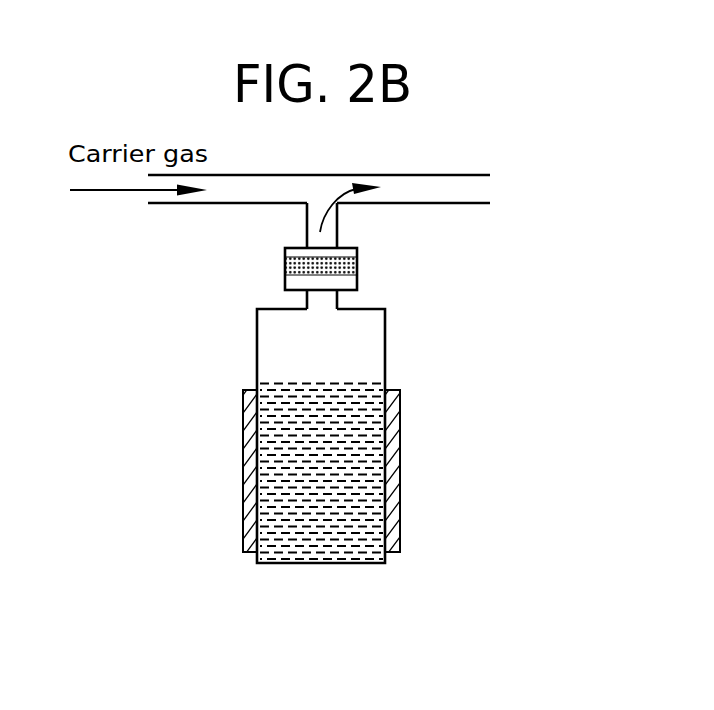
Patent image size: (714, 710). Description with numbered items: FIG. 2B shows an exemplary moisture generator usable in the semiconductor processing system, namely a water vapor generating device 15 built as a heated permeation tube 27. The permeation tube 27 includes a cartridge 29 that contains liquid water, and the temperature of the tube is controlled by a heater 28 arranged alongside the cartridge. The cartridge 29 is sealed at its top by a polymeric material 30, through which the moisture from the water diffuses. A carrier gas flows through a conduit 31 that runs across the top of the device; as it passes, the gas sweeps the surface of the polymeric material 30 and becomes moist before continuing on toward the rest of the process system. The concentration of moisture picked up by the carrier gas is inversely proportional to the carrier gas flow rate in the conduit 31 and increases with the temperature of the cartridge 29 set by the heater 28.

The water vapor generating device 15 is at (352, 439).
The heated permeation tube 27 is at (352, 389).
The heater 28 is at (400, 510).
The cartridge 29 is at (257, 343).
The polymeric material 30 is at (357, 268).
The conduit 31 is at (170, 205).